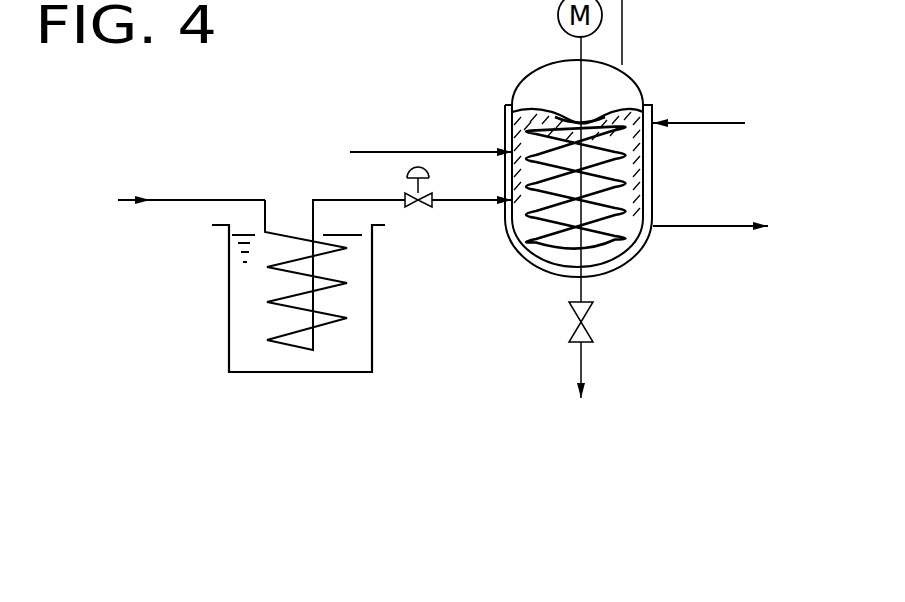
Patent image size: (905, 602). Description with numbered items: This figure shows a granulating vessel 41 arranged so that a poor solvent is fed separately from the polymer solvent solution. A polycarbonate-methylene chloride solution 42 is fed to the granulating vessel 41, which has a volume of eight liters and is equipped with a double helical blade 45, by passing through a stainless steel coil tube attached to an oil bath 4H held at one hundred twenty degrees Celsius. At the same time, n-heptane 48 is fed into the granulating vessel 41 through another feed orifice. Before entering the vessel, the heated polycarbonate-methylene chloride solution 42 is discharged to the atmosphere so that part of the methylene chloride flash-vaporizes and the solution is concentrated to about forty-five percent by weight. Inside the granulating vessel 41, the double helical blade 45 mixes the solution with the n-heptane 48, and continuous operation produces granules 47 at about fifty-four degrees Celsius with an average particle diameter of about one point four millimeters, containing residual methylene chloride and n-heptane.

The polycarbonate-methylene chloride solution 42 is at (261, 254).
The oil bath 4H is at (250, 372).
The n-heptane 48 is at (431, 132).
The granulating vessel 41 is at (654, 189).
The granules 47 is at (615, 122).
The double helical blade 45 is at (612, 253).